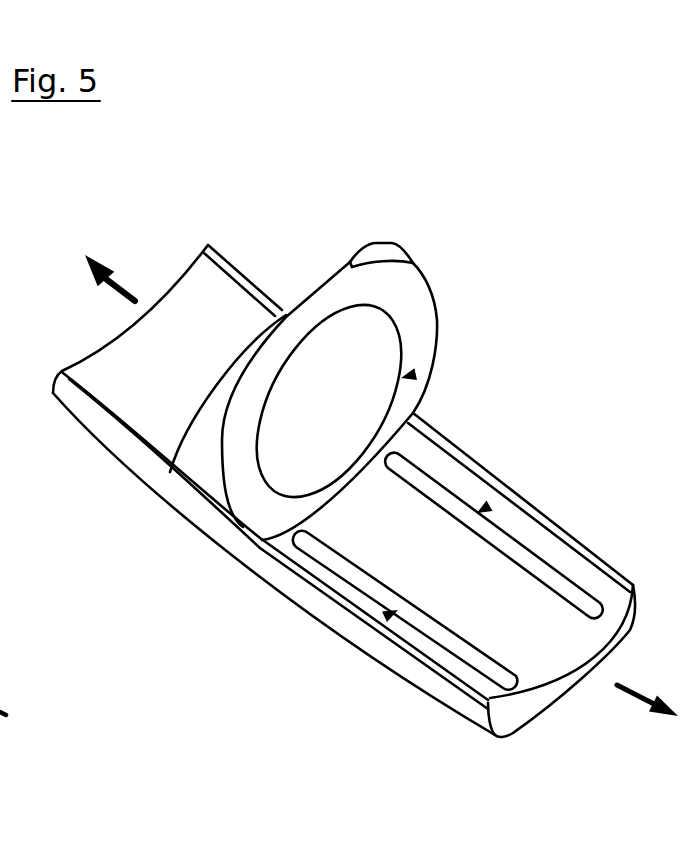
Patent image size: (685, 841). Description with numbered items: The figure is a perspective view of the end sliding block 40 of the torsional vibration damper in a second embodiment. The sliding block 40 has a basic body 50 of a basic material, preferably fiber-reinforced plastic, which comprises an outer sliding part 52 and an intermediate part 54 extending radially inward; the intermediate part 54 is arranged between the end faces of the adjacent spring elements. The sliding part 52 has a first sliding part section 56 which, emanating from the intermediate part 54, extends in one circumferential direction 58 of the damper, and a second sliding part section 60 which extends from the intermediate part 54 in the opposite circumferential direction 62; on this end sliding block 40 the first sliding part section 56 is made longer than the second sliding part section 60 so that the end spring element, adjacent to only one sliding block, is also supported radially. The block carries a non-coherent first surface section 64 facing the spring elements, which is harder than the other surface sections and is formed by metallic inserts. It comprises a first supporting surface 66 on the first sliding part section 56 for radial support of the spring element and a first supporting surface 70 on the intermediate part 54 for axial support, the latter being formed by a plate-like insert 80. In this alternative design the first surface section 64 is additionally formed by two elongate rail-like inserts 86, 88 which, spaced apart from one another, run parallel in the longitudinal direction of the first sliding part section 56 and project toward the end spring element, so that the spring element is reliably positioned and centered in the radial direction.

The sliding block 40 is at (508, 194).
The basic body 50 is at (251, 596).
The outer sliding part 52 is at (227, 535).
The intermediate part 54 is at (217, 433).
The first sliding part section 56 is at (388, 653).
The circumferential direction 58 is at (623, 687).
The second sliding part section 60 is at (108, 435).
The circumferential direction 62 is at (123, 283).
The first surface section 64 is at (448, 500).
The first supporting surface 66 is at (31, 450).
The first supporting surface 70 is at (345, 373).
The metallic plate-like insert 80 is at (415, 374).
The rail-like insert 86 is at (385, 616).
The rail-like insert 88 is at (489, 506).